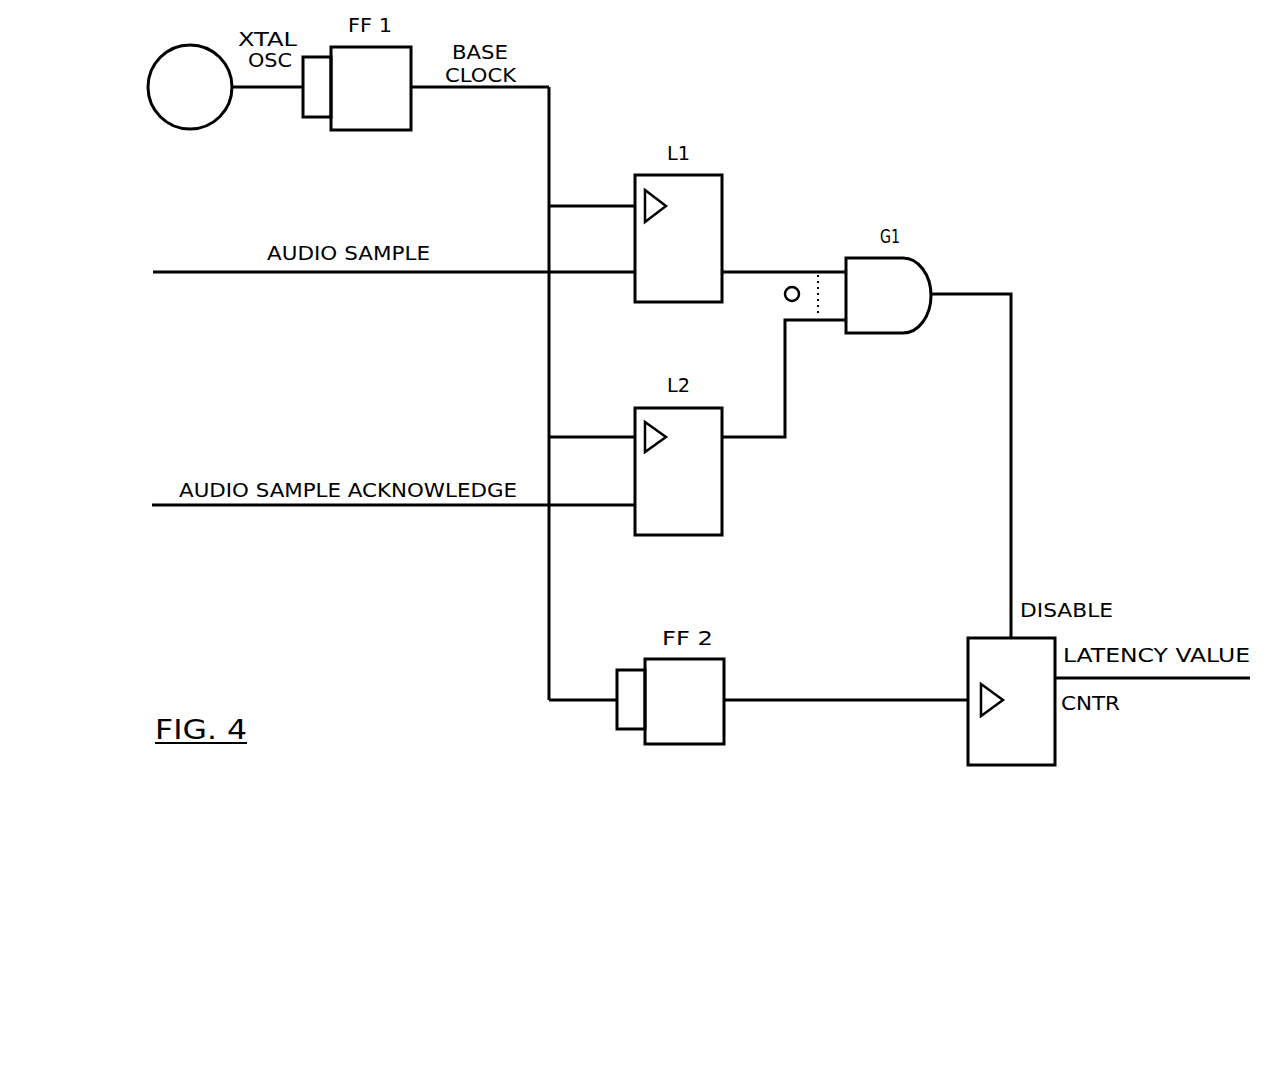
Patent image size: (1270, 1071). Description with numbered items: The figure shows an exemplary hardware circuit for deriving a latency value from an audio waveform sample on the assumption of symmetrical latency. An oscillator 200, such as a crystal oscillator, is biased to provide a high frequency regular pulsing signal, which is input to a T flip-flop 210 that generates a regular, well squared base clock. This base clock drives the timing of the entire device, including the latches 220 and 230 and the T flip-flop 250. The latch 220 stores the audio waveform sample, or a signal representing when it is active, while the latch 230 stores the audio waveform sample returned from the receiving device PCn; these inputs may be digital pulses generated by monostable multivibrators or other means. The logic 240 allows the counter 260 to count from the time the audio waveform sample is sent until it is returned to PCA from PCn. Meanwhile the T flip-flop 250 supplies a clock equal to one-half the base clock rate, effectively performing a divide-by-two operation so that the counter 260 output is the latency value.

The oscillator 200 is at (208, 128).
The T flip-flop 210 is at (390, 130).
The latch 220 is at (698, 302).
The latch 230 is at (698, 535).
The logic 240 is at (880, 333).
The T flip-flop 250 is at (703, 744).
The counter 260 is at (1033, 765).